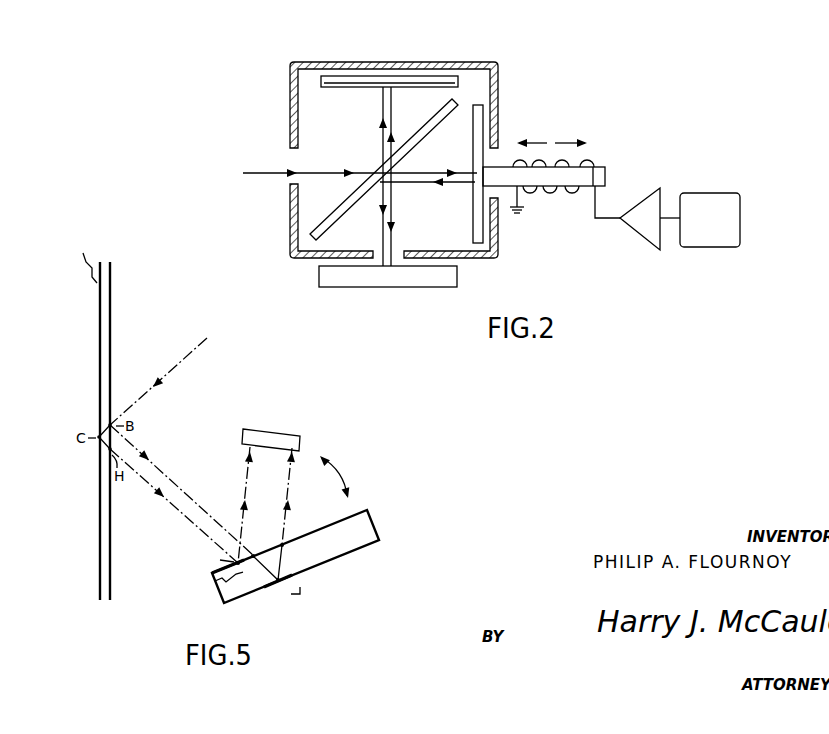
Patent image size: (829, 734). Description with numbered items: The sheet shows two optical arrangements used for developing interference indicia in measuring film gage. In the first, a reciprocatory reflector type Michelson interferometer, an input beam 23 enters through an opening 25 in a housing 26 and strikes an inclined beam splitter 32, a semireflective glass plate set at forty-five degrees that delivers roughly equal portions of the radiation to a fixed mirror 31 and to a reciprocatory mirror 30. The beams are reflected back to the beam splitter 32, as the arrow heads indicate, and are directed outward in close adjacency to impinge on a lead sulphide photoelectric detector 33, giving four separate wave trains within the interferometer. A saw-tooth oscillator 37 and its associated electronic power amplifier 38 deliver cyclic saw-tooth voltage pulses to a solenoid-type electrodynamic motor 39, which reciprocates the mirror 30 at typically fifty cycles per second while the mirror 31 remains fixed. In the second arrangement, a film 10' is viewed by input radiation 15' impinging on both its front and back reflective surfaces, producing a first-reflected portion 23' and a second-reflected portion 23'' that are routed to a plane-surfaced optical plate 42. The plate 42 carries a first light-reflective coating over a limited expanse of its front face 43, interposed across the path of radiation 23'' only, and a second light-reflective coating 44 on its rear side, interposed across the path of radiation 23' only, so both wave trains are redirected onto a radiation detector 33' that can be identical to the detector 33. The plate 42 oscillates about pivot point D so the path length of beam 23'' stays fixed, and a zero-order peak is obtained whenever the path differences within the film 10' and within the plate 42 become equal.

In FIG. 5, the film 10' is at (97, 417).
In FIG. 5, the input radiation 15' is at (158, 381).
In FIG. 2, the beam 23 is at (360, 176).
In FIG. 5, the first-reflected portion 23' is at (181, 490).
In FIG. 5, the second-reflected portion 23'' is at (174, 506).
In FIG. 2, the entrance aperture 25 is at (295, 158).
In FIG. 2, the housing 26 is at (431, 149).
In FIG. 2, the reciprocatory mirror 30 is at (473, 112).
In FIG. 2, the fixed mirror 31 is at (418, 76).
In FIG. 2, the beam splitter 32 is at (352, 200).
In FIG. 2, the photoelectric detector 33 is at (409, 281).
In FIG. 5, the radiation detector 33' is at (274, 427).
In FIG. 2, the saw-tooth oscillator 37 is at (713, 193).
In FIG. 2, the electronic power amplifier 38 is at (645, 241).
In FIG. 2, the electrodynamic motor 39 is at (544, 194).
In FIG. 5, the optical plate 42 is at (320, 526).
In FIG. 5, the front face 43 is at (226, 588).
In FIG. 5, the second light-reflective coating 44 is at (265, 608).